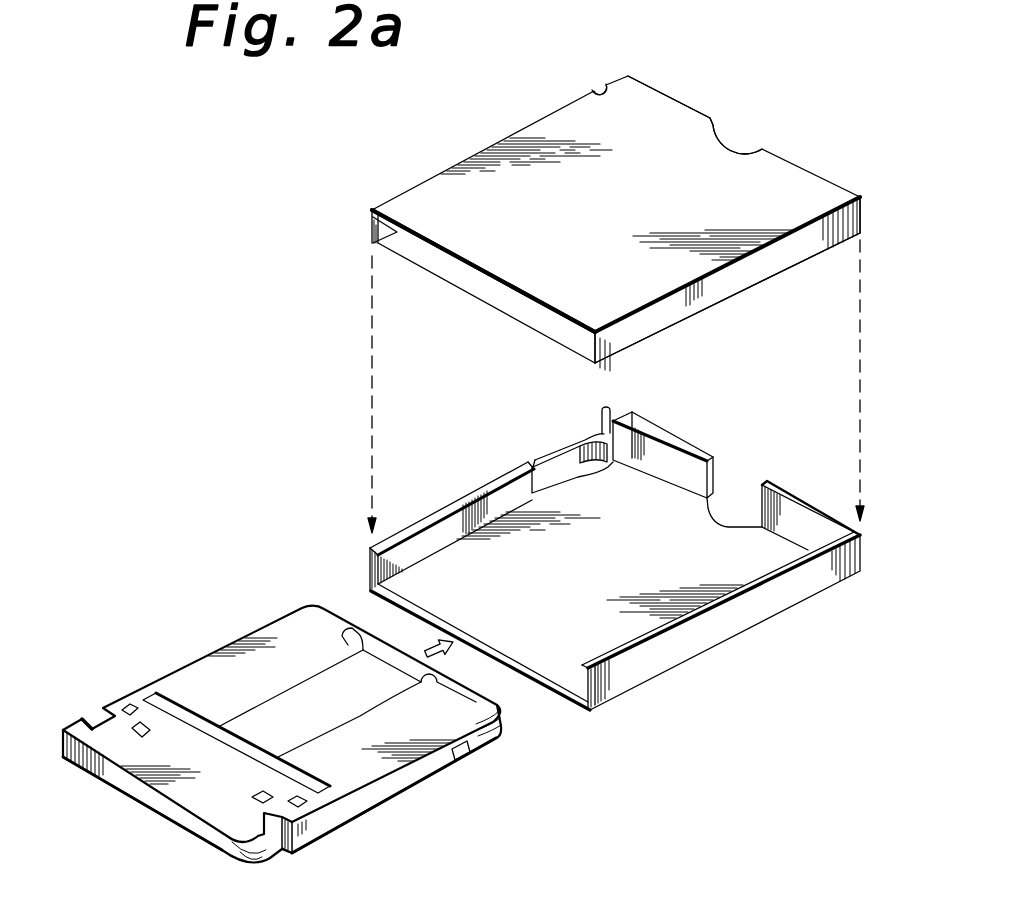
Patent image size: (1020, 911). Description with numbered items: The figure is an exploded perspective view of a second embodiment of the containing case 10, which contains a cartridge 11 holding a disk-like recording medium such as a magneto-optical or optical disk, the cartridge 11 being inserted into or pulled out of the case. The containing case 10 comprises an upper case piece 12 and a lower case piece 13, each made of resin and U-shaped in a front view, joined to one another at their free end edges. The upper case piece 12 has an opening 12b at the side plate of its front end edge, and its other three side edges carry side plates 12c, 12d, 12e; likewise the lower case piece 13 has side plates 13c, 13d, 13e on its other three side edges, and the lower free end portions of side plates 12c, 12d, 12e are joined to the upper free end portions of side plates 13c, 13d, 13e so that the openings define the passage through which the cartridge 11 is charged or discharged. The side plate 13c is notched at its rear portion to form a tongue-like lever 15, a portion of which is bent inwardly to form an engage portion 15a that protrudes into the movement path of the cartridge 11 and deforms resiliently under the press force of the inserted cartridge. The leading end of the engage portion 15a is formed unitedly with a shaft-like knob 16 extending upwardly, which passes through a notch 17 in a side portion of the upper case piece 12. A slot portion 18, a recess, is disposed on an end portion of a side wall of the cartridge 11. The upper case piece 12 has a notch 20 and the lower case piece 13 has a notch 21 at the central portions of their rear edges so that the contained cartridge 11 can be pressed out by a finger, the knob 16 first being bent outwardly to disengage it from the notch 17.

The containing case 10 is at (315, 405).
The cartridge 11 is at (282, 723).
The upper case piece 12 is at (571, 203).
The opening 12b is at (468, 270).
The side plate 12c is at (368, 233).
The side plate 12d is at (803, 254).
The side plate 12e is at (684, 107).
The lower case piece 13 is at (564, 580).
The side plate 13c is at (466, 512).
The side plate 13d is at (430, 586).
The side plate 13e is at (796, 508).
The lever 15 is at (560, 420).
The engage portion 15a is at (596, 430).
The knob 16 is at (609, 425).
The notch 17 is at (598, 88).
The slot portion 18 is at (468, 754).
The notch 20 is at (729, 146).
The notch 21 is at (733, 519).